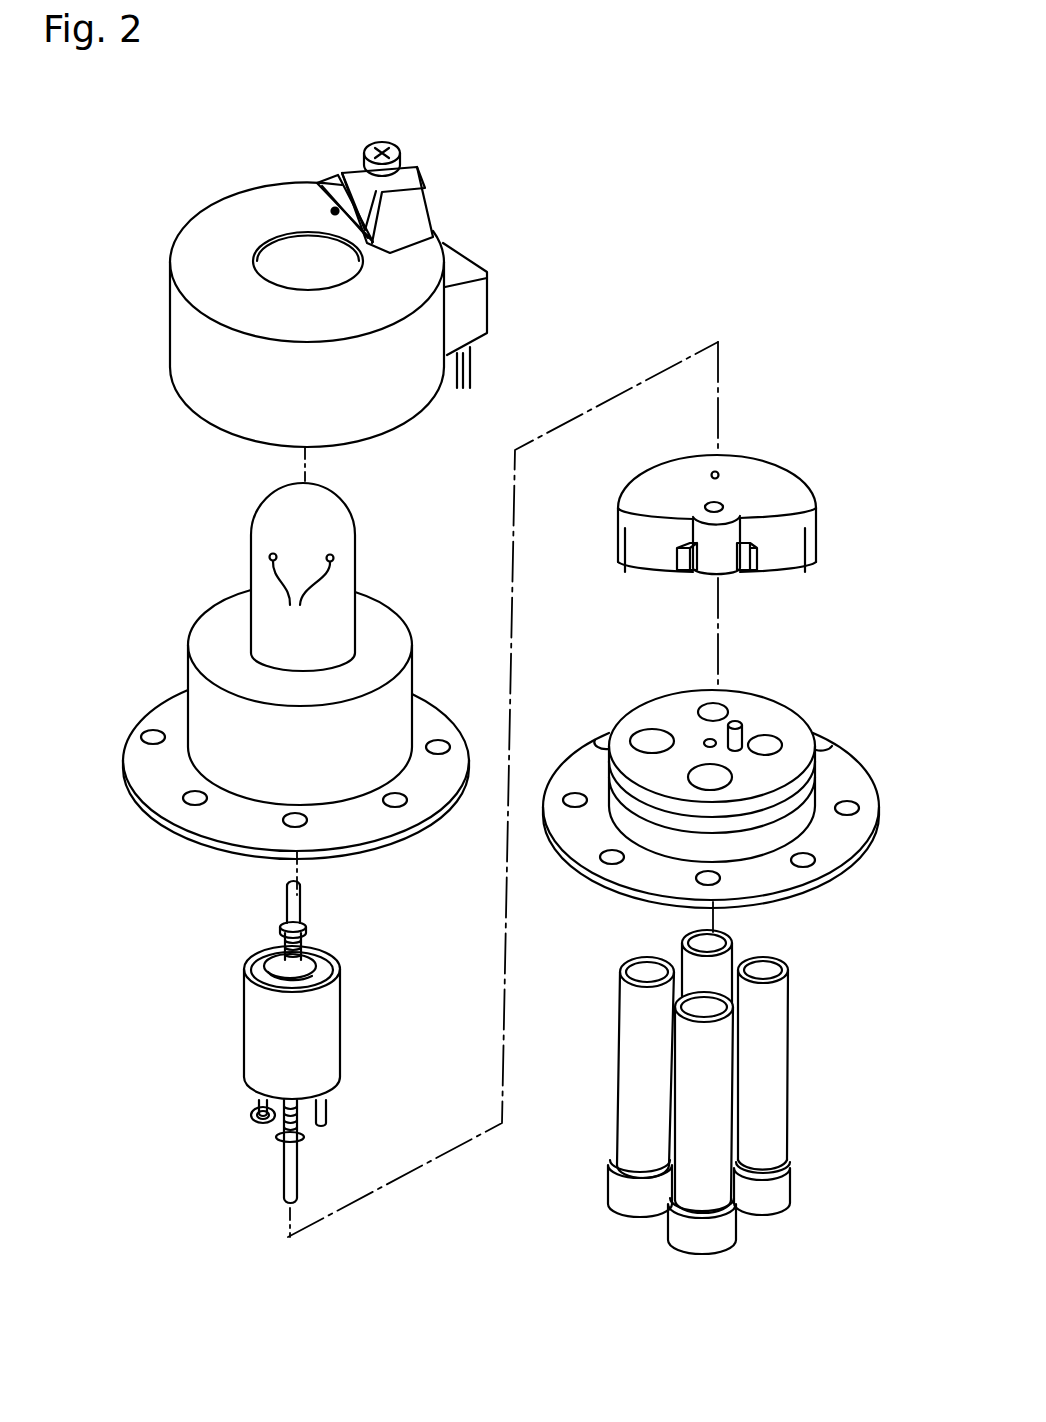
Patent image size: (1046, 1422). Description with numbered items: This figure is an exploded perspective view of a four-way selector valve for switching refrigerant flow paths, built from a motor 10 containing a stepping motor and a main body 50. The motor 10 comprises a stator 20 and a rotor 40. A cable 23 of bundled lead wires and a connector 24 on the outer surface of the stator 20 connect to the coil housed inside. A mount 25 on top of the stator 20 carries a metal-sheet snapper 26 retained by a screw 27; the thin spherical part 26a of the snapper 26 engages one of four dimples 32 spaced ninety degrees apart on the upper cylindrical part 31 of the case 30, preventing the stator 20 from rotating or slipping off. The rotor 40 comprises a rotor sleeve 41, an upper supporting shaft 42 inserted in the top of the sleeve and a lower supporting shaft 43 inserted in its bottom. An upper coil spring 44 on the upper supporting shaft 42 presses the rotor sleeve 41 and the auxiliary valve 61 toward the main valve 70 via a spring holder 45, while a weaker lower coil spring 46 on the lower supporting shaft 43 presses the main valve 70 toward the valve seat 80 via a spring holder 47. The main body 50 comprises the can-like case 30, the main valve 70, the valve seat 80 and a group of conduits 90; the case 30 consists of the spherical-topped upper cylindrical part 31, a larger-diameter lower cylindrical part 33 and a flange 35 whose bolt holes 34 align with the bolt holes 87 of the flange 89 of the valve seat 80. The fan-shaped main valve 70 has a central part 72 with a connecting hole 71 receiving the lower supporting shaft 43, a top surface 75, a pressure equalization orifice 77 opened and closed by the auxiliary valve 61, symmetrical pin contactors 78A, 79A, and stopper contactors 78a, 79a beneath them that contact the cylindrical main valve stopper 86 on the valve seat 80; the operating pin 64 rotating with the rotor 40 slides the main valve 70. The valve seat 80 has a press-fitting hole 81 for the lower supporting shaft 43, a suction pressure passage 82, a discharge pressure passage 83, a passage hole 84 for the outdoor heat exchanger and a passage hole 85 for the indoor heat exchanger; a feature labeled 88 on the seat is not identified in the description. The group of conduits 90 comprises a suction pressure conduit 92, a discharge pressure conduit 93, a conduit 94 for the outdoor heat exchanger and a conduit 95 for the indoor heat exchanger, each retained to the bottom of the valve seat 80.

The motor 10 is at (93, 213).
The stator 20 is at (222, 187).
The cable 23 is at (474, 366).
The connector 24 is at (475, 262).
The mount 25 is at (412, 198).
The snapper 26 is at (337, 172).
The spherical part 26a is at (332, 212).
The screw 27 is at (397, 150).
The case 30 is at (193, 610).
The upper cylindrical part 31 is at (333, 523).
The dimples 32 is at (302, 599).
The lower cylindrical part 33 is at (380, 707).
The bolt hole 34 is at (193, 800).
The flange 35 is at (403, 827).
The rotor 40 is at (237, 1022).
The rotor sleeve 41 is at (320, 980).
The upper supporting shaft 42 is at (300, 903).
The lower supporting shaft 43 is at (283, 1137).
The upper coil spring 44 is at (280, 938).
The spring holder 45 is at (307, 927).
The lower coil spring 46 is at (297, 1110).
The spring holder 47 is at (297, 1140).
The main body 50 is at (798, 275).
The auxiliary valve 61 is at (253, 1127).
The operating pin 64 is at (337, 1112).
The main valve 70 is at (618, 482).
The connecting hole 71 is at (790, 503).
The central part 72 is at (703, 504).
The top surface 75 is at (775, 478).
The pressure equalization orifice 77 is at (717, 472).
The pin contactor 78A is at (792, 542).
The stopper contactor 78a is at (743, 568).
The pin contactor 79A is at (638, 530).
The stopper contactor 79a is at (677, 557).
The valve seat 80 is at (803, 677).
The press-fitting hole 81 is at (708, 742).
The suction pressure passage 82 is at (643, 735).
The discharge pressure passage 83 is at (770, 742).
The passage hole for the outdoor heat exchanger 84 is at (717, 708).
The passage hole for the indoor heat exchanger 85 is at (702, 777).
The main valve stopper 86 is at (742, 732).
The bolt hole 87 is at (817, 855).
The grooves 88 is at (802, 800).
The flange 89 is at (603, 882).
The group of conduits 90 is at (608, 1082).
The suction pressure conduit 92 is at (633, 1017).
The discharge pressure conduit 93 is at (770, 1053).
The conduit for the outdoor heat exchanger 94 is at (730, 942).
The conduit for the indoor heat exchanger 95 is at (715, 1127).